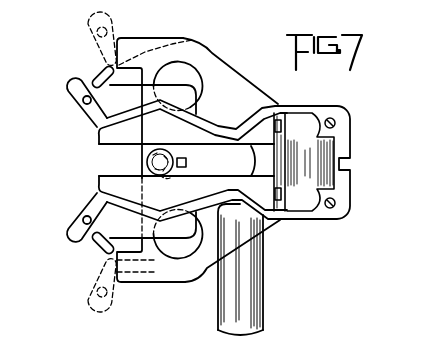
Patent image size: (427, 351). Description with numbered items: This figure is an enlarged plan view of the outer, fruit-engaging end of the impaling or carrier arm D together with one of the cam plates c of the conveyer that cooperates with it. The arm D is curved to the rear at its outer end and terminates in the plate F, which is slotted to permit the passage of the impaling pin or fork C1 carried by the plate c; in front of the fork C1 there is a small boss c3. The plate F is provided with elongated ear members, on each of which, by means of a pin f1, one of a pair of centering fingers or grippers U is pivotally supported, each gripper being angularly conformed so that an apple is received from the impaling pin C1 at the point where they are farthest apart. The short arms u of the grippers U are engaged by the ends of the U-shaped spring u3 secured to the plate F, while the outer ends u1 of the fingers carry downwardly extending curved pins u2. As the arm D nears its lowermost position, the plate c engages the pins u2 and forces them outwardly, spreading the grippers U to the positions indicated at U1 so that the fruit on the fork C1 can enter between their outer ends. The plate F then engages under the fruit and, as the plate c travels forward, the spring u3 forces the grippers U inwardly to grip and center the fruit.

The plate F is at (125, 139).
The plate c is at (205, 60).
The spread position of grippers U1 is at (135, 50).
The centering fingers or grippers U is at (226, 126).
The outer ends of fingers u1 is at (74, 89).
The curved pins u2 is at (98, 78).
The short arms u is at (350, 147).
The U-shaped spring u3 is at (312, 220).
The pin f1 is at (336, 123).
The impaling pin or fork C1 is at (186, 163).
The small boss c3 is at (168, 173).
The carrier arm D is at (264, 305).